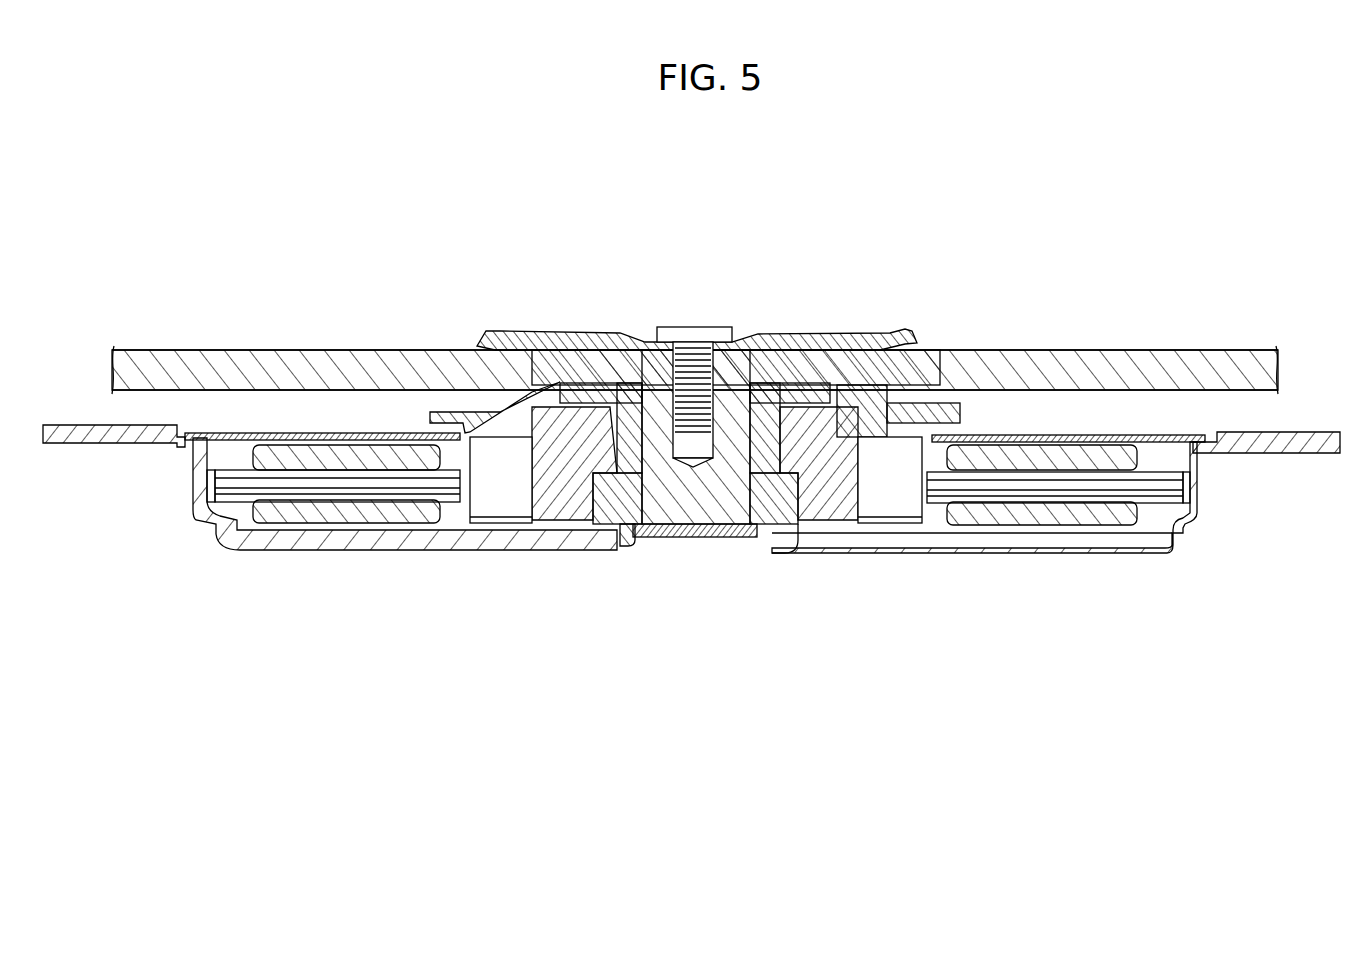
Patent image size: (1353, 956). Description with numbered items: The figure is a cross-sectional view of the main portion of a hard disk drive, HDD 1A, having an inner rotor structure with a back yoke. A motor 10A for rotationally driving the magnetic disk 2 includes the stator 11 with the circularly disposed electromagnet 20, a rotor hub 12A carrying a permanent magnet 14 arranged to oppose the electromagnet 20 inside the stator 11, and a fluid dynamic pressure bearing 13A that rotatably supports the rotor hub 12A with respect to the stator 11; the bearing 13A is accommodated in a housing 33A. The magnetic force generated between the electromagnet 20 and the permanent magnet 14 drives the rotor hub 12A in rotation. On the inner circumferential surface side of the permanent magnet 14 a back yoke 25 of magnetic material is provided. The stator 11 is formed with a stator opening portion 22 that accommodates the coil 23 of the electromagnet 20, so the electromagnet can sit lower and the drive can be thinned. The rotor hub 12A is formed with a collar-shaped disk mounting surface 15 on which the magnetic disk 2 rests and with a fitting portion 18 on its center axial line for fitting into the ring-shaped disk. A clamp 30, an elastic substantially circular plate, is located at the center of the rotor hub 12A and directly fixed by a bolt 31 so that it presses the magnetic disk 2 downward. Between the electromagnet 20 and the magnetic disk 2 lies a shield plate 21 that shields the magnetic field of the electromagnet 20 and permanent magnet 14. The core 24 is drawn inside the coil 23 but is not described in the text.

The HDD 1A is at (852, 246).
The magnetic disk 2 is at (1143, 350).
The motor 10A is at (759, 314).
The stator 11 is at (1163, 540).
The rotor hub 12A is at (810, 357).
The fluid dynamic pressure bearing 13A is at (690, 584).
The permanent magnet 14 is at (890, 510).
The disk mounting surface 15 is at (886, 382).
The fitting portion 18 is at (868, 382).
The electromagnet 20 is at (1012, 574).
The shield plate 21 is at (1183, 435).
The stator opening portion 22 is at (937, 527).
The coil 23 is at (1073, 525).
The core 24 is at (1145, 500).
The back yoke 25 is at (822, 510).
The clamp 30 is at (565, 335).
The bolt 31 is at (695, 327).
The housing 33A is at (648, 558).